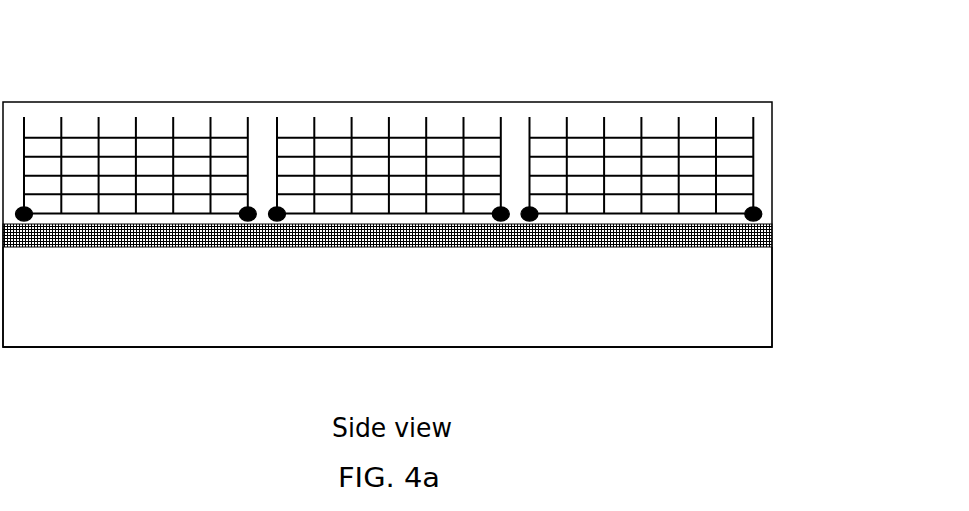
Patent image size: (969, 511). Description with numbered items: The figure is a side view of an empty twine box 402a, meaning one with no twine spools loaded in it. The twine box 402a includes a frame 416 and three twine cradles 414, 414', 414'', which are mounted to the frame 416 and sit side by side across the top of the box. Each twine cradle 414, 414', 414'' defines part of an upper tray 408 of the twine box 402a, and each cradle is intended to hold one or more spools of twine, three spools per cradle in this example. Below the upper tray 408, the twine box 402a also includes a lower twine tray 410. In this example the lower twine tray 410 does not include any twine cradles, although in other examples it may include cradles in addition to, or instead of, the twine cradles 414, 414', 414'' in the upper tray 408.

The twine box 402a is at (424, 89).
The upper tray 408 is at (400, 133).
The lower twine tray 410 is at (783, 291).
The twine cradle 414 is at (136, 140).
The twine cradle 414' is at (389, 138).
The twine cradle 414'' is at (641, 140).
The frame 416 is at (128, 348).